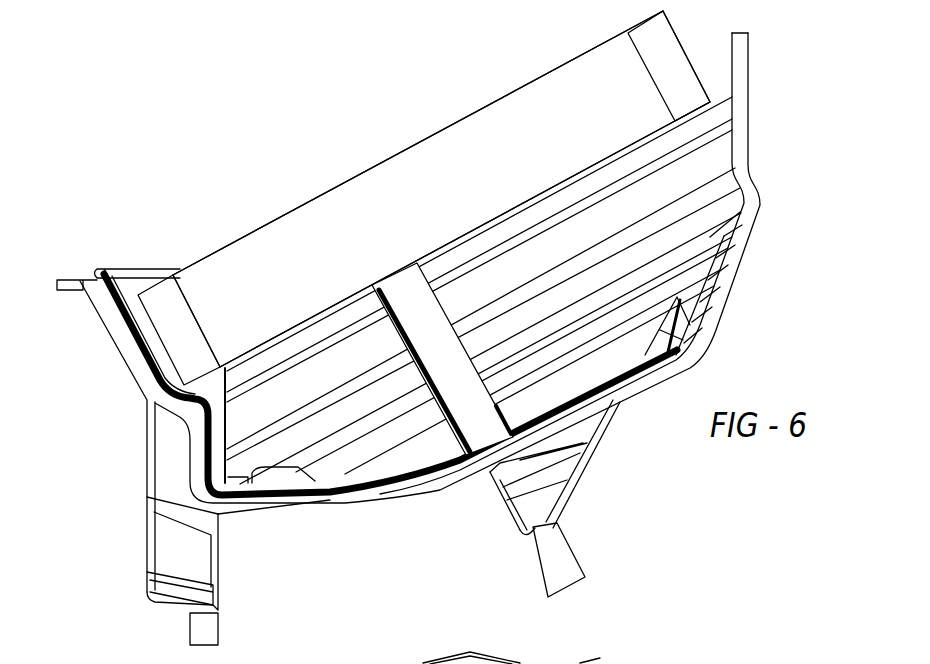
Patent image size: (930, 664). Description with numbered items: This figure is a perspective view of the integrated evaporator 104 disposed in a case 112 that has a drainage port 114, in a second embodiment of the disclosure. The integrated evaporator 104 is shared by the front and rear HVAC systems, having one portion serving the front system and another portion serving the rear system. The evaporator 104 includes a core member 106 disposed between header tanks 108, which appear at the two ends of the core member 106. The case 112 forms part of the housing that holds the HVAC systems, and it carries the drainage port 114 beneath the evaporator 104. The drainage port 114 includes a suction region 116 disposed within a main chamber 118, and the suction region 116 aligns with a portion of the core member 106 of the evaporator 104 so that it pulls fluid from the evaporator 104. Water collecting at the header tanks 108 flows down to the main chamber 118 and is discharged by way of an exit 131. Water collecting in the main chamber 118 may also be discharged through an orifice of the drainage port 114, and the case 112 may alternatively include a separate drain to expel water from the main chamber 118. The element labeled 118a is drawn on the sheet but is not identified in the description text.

The integrated evaporator 104 is at (497, 96).
The core member 106 is at (282, 273).
The header tanks 108 is at (685, 88).
The case 112 is at (657, 383).
The drainage port 114 is at (533, 566).
The suction region 116 is at (312, 663).
The main chamber 118 is at (580, 663).
The leg 118a is at (182, 558).
The exit 131 is at (200, 647).